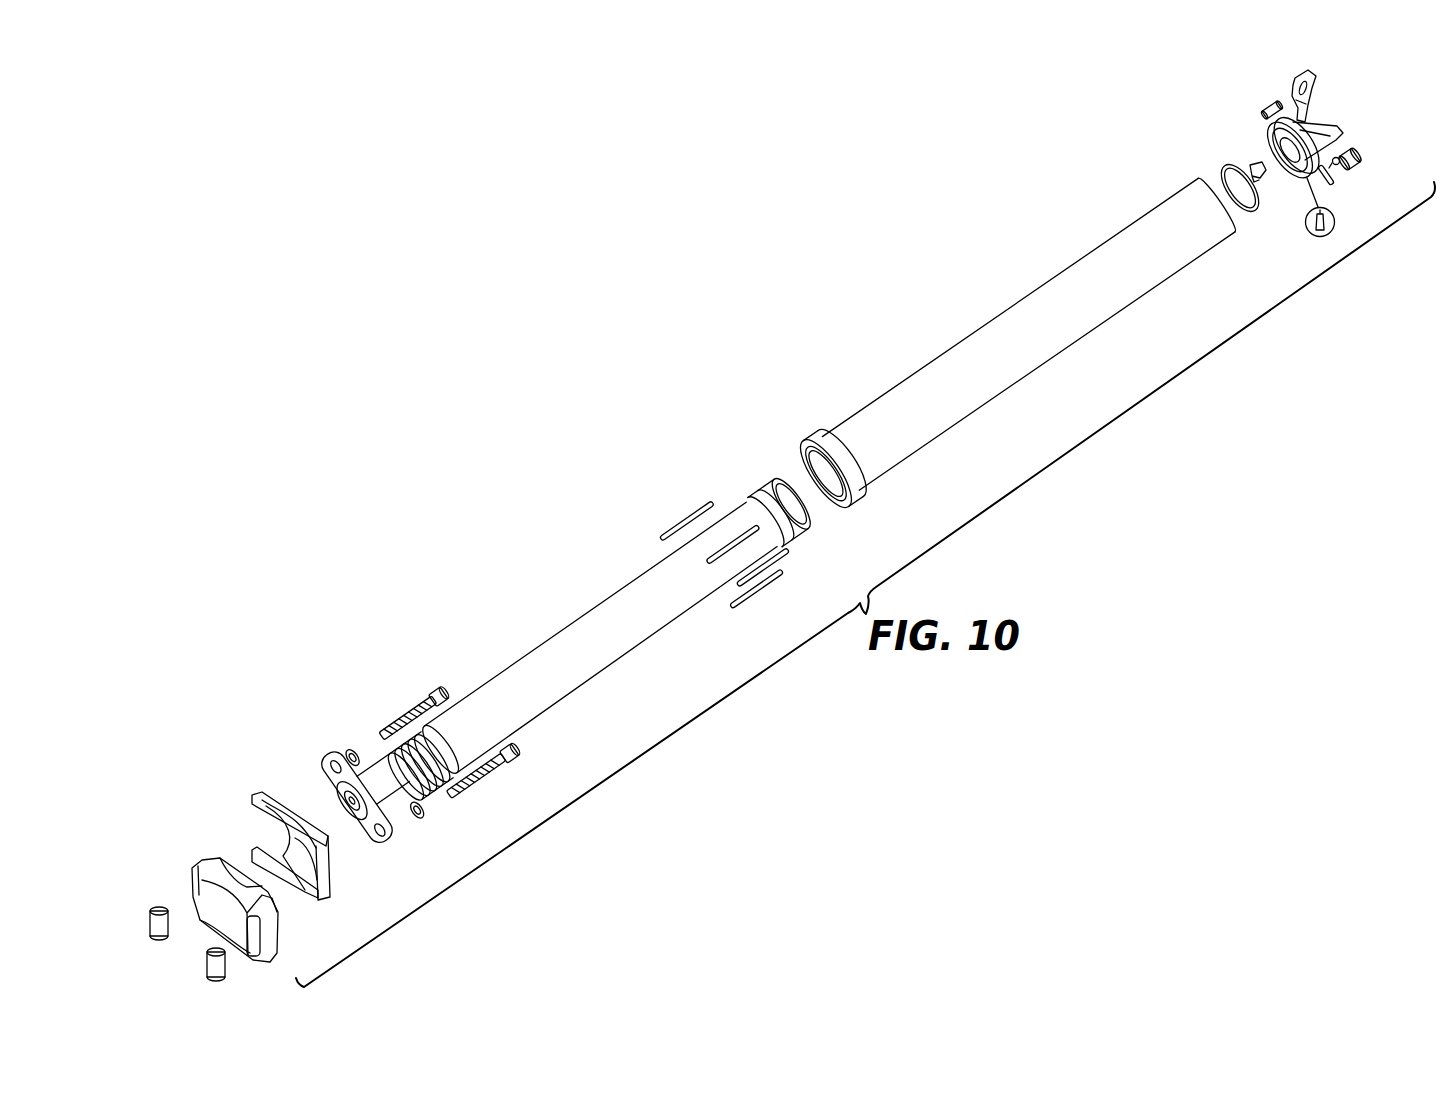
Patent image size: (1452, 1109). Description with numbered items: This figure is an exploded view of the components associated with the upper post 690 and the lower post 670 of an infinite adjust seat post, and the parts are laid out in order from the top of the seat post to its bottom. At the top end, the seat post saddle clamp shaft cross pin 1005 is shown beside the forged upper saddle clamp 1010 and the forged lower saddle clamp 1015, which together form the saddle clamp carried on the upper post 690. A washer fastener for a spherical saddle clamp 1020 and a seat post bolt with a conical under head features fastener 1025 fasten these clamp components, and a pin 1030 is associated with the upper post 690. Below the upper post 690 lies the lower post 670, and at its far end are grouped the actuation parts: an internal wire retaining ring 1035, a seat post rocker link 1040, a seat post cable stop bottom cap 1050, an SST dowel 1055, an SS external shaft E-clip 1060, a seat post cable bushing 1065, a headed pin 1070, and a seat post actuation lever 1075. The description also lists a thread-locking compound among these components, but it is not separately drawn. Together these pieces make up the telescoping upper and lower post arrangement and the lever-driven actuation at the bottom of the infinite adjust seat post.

The lower post 670 is at (1077, 333).
The upper post 690 is at (633, 640).
The seat post saddle clamp shaft cross pin 1005 is at (206, 952).
The forged upper saddle clamp 1010 is at (208, 855).
The forged lower saddle clamp 1015 is at (260, 793).
The washer fastener for a spherical saddle clamp 1020 is at (350, 752).
The seat post bolt with a conical under head features fastener 1025 is at (427, 696).
The pin 1030 is at (690, 517).
The internal wire retaining ring 1035 is at (1235, 165).
The seat post rocker link 1040 is at (1257, 160).
The seat post cable stop bottom cap 1050 is at (1322, 172).
The SST dowel 1055 is at (1330, 180).
The SS external shaft E-clip 1060 is at (1341, 162).
The seat post cable bushing 1065 is at (1355, 148).
The headed pin 1070 is at (1262, 108).
The seat post actuation lever 1075 is at (1313, 95).